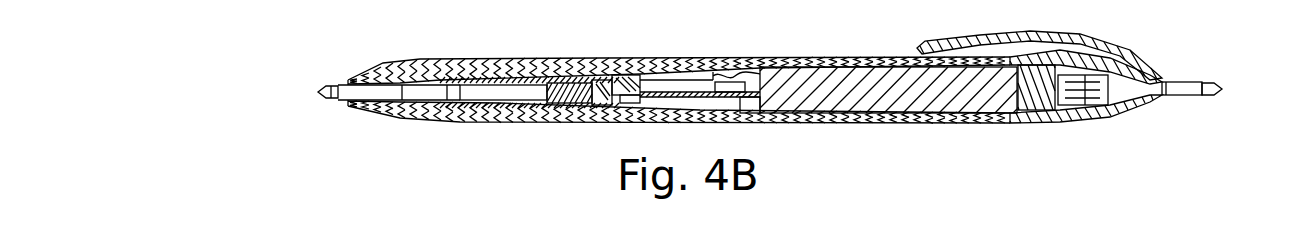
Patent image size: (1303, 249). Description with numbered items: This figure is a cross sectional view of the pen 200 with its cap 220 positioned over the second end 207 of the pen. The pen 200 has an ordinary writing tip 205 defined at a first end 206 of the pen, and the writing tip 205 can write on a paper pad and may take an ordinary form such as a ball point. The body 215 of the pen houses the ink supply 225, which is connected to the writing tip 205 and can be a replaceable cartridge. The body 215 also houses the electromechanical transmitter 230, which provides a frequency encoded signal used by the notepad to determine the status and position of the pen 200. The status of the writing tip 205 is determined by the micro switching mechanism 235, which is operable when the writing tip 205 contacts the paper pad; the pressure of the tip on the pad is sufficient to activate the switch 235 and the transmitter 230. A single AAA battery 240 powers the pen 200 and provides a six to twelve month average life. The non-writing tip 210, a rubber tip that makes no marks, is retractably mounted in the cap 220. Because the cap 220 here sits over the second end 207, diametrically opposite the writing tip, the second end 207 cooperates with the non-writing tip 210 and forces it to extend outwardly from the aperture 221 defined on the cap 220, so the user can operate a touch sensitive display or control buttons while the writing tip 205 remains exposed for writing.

The pen 200 is at (345, 123).
The writing tip 205 is at (334, 84).
The first end 206 is at (376, 64).
The second end 207 is at (1138, 118).
The non-writing tip 210 is at (1202, 83).
The body 215 is at (706, 44).
The cap 220 is at (1105, 108).
The aperture 221 is at (1204, 96).
The ink supply 225 is at (478, 95).
The electromechanical transmitter 230 is at (1036, 108).
The micro switching mechanism 235 is at (633, 66).
The AAA battery 240 is at (906, 104).